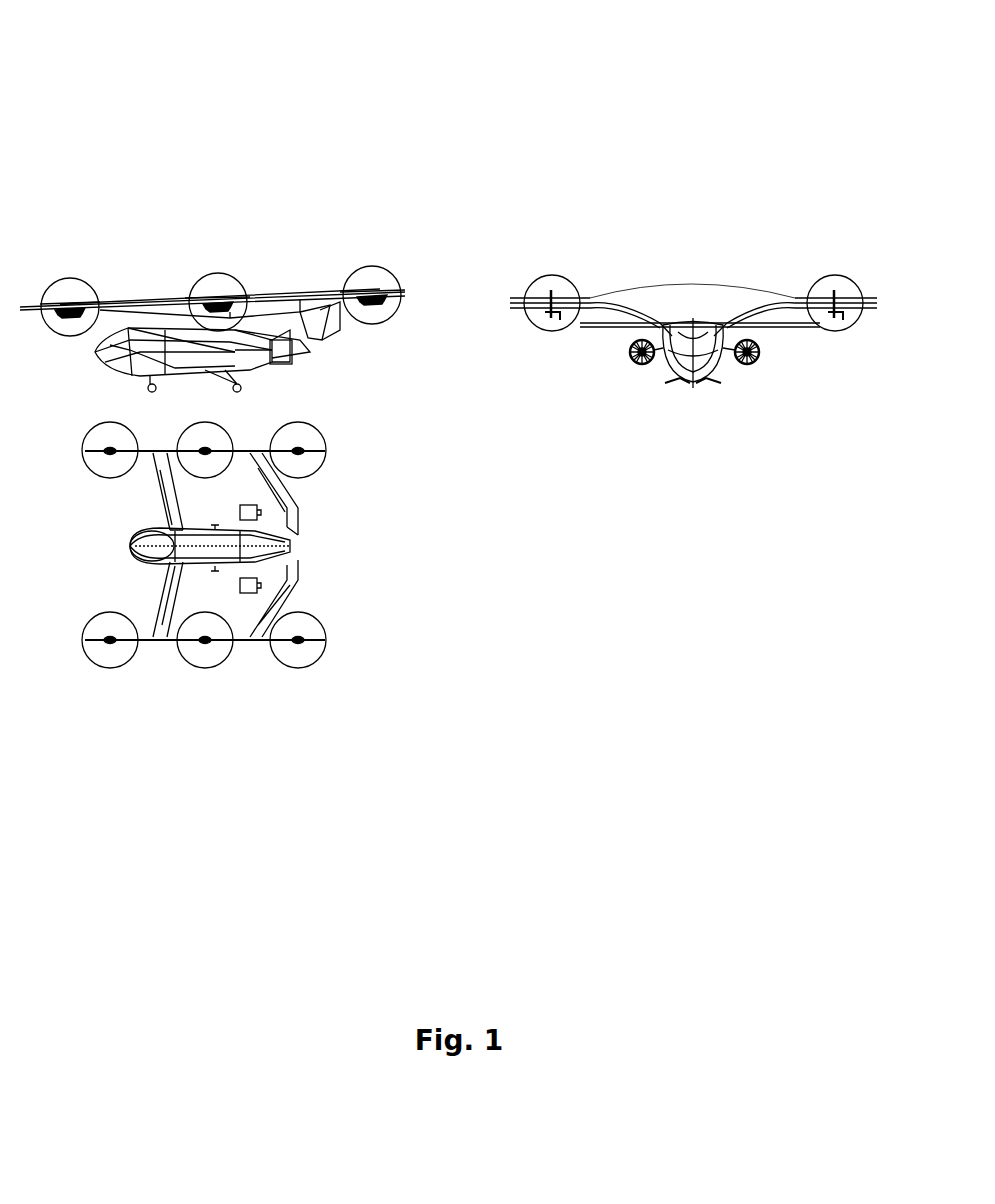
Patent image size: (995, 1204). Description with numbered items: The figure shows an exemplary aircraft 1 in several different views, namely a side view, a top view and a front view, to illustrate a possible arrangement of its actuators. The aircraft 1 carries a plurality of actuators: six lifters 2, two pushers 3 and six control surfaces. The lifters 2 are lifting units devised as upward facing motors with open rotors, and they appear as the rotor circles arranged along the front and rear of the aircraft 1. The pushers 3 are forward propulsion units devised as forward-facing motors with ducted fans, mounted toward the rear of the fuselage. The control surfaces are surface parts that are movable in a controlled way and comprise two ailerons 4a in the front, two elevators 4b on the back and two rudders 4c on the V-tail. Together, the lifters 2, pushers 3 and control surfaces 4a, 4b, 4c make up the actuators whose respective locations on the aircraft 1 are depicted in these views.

The aircraft 1 is at (262, 218).
The lifters 2 is at (63, 308).
The pushers 3 is at (293, 357).
The ailerons 4a is at (183, 500).
The elevators 4b is at (287, 603).
The rudders 4c is at (290, 527).